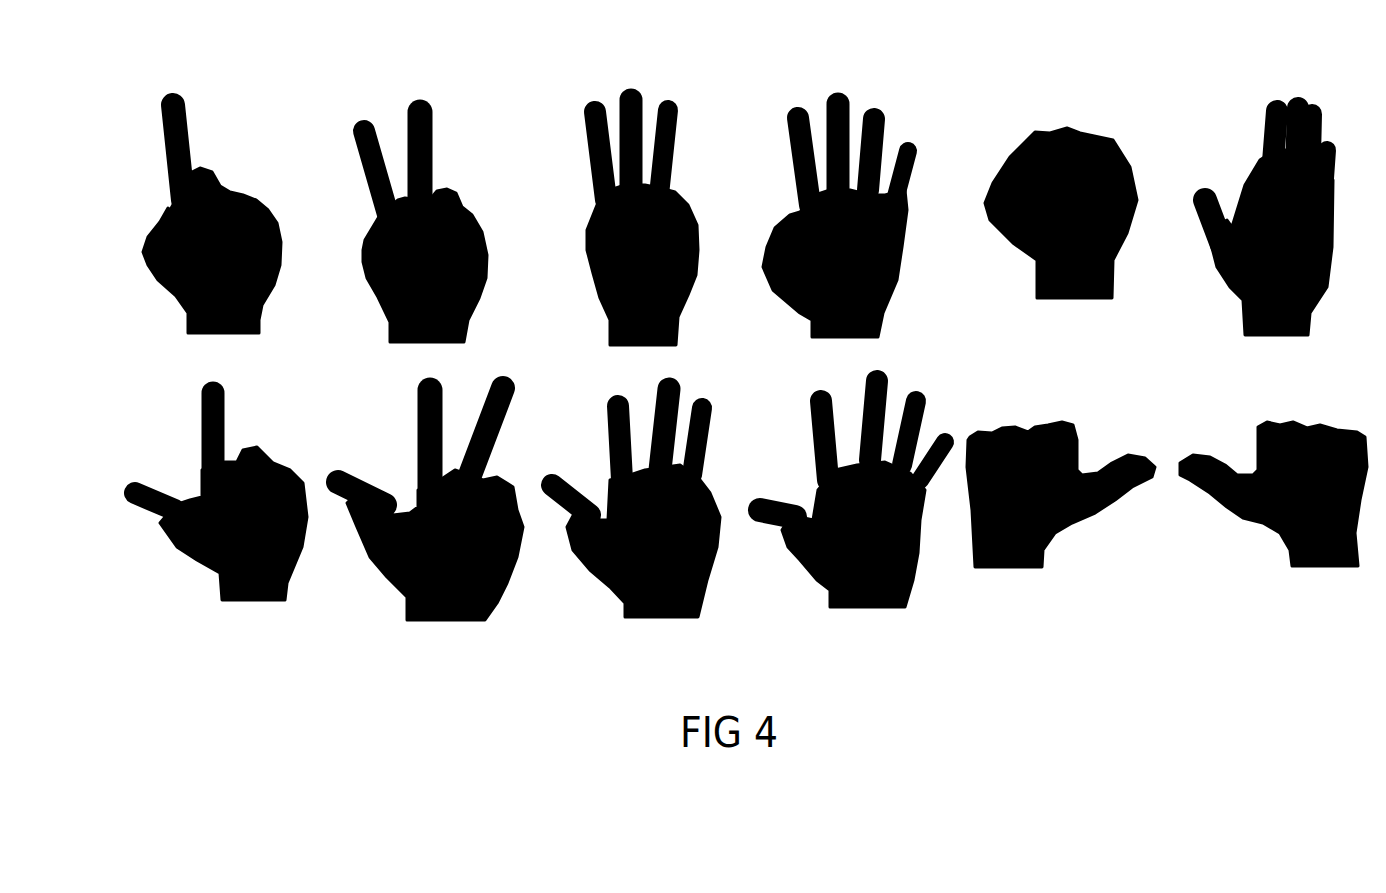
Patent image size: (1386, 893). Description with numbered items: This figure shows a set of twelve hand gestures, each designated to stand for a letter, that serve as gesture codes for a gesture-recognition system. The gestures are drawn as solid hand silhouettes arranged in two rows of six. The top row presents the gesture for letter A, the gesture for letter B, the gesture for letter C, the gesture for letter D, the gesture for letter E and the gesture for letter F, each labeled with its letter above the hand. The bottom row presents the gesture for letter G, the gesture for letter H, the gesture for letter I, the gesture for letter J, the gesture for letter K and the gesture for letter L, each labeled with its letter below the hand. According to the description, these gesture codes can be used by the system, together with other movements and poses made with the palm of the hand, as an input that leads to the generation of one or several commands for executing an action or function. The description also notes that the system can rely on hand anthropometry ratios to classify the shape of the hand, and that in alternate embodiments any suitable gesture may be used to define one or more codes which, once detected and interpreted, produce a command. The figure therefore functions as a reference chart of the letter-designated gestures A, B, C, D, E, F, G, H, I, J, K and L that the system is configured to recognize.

The gesture for letter A is at (212, 181).
The gesture for letter B is at (425, 184).
The gesture for letter C is at (642, 186).
The gesture for letter D is at (835, 182).
The gesture for letter E is at (1061, 167).
The gesture for letter F is at (1269, 185).
The gesture for letter G is at (221, 536).
The gesture for letter H is at (430, 534).
The gesture for letter I is at (636, 534).
The gesture for letter J is at (852, 530).
The gesture for letter K is at (1061, 551).
The gesture for letter L is at (1273, 551).